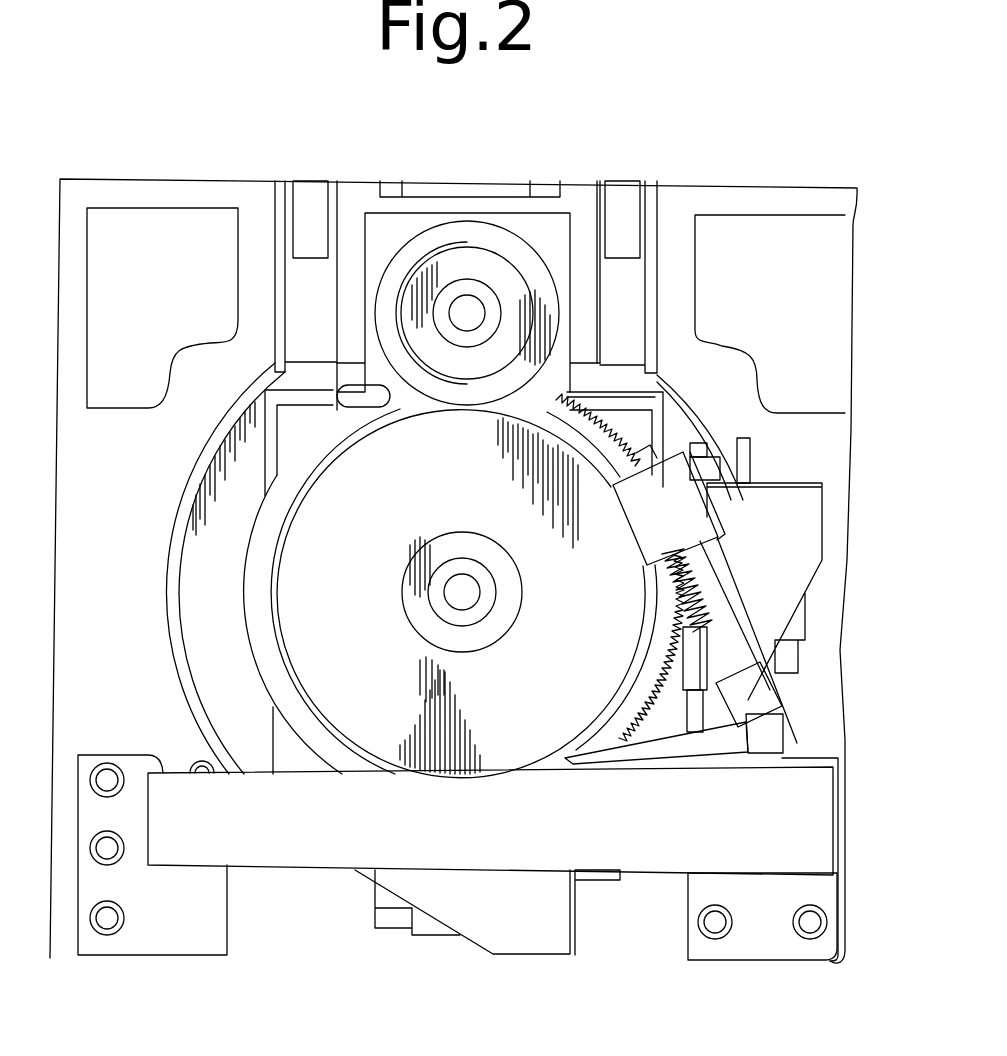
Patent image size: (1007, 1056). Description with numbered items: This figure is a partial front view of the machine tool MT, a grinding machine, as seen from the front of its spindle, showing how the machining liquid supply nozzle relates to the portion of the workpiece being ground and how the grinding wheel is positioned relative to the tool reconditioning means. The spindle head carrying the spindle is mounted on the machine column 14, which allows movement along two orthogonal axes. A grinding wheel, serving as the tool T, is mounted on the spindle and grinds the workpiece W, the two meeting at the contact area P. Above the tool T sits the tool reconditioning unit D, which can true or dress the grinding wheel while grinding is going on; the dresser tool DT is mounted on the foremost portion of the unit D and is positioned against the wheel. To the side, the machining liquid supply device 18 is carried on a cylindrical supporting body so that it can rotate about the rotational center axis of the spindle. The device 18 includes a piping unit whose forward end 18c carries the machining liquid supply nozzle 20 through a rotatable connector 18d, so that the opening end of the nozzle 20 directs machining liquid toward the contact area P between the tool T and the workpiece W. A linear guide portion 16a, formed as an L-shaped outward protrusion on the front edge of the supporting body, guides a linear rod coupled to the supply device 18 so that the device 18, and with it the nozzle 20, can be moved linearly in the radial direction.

The machine tool MT is at (369, 158).
The machine column 14 is at (678, 206).
The tool reconditioning unit D is at (383, 242).
The dresser tool DT is at (473, 232).
The tool T is at (293, 614).
The linear guide portion 16a is at (697, 510).
The machining liquid supply device 18 is at (713, 603).
The forward end of the piping unit 18c is at (756, 703).
The rotatable connector 18d is at (765, 740).
The machining liquid supply nozzle 20 is at (662, 752).
The workpiece W is at (313, 838).
The contact area P is at (508, 786).